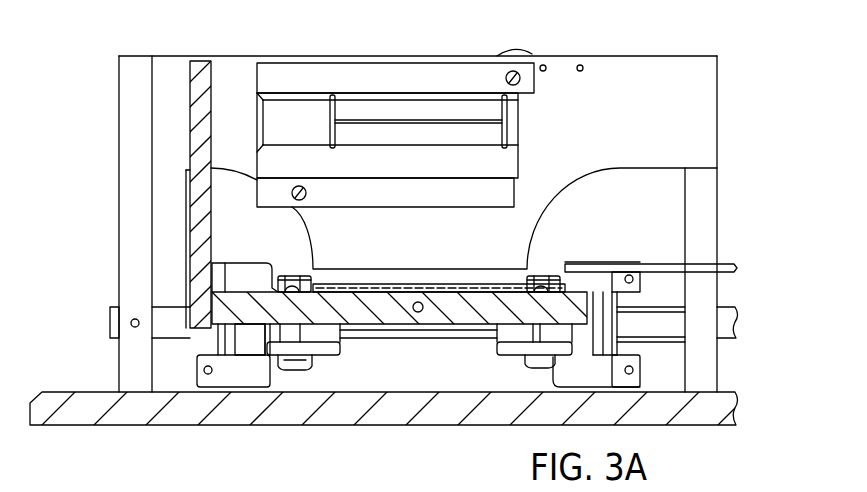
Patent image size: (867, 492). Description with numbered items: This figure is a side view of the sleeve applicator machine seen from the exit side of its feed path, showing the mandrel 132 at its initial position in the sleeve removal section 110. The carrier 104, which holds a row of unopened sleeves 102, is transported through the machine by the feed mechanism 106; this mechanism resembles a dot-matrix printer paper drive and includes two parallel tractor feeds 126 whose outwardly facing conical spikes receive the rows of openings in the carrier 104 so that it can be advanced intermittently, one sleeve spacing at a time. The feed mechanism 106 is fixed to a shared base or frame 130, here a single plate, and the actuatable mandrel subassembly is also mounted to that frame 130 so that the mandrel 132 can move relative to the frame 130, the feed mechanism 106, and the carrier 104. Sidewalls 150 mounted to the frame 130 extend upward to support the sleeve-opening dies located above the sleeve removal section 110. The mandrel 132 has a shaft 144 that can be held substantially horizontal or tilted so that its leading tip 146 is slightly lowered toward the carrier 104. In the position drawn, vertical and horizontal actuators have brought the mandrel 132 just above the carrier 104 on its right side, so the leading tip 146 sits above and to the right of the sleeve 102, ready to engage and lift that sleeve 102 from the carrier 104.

The sleeve 102 is at (400, 285).
The carrier 104 is at (300, 285).
The feed mechanism 106 is at (516, 360).
The sleeve removal section 110 is at (532, 206).
The tractor feeds 126 is at (290, 372).
The frame 130 is at (677, 418).
The mandrel 132 is at (667, 260).
The shaft 144 is at (697, 268).
The leading tip 146 is at (542, 261).
The sidewalls 150 is at (200, 117).